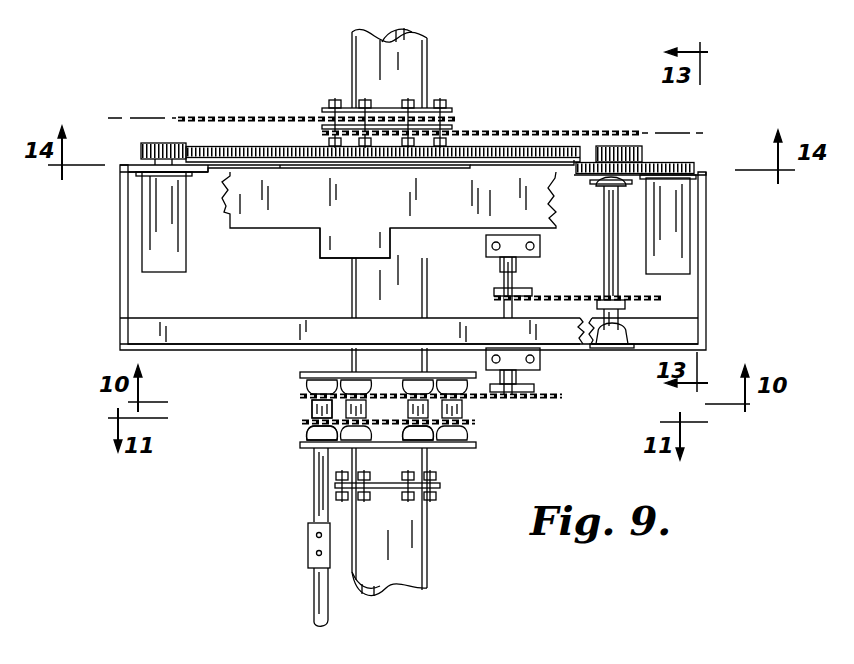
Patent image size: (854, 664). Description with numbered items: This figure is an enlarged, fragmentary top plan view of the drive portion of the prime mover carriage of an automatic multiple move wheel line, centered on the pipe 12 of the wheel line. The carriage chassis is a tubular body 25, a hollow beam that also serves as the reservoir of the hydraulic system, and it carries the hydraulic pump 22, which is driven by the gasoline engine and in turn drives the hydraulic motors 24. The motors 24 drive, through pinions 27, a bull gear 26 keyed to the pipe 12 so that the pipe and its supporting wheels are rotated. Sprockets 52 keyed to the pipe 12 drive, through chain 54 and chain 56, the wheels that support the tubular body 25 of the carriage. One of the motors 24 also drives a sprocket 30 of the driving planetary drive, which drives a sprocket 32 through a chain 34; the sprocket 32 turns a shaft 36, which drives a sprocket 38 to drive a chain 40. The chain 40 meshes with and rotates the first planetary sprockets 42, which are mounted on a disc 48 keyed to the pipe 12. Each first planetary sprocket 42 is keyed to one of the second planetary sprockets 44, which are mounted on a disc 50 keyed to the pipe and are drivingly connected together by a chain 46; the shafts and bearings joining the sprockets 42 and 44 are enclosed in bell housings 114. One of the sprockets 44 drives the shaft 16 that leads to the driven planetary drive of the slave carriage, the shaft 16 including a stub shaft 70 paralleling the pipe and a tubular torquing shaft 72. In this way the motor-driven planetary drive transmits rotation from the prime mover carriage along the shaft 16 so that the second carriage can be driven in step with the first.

The pipe 12 is at (354, 44).
The chain 54 is at (276, 116).
The bull gear 26 is at (240, 146).
The pinions 27 is at (155, 142).
The sprockets 52 is at (440, 128).
The chain 56 is at (512, 132).
The hydraulic motors 24 is at (143, 260).
The tubular body 25 is at (300, 228).
The hydraulic pump 22 is at (340, 260).
The shaft 36 is at (504, 276).
The sprocket 32 is at (496, 292).
The chain 34 is at (538, 299).
The sprocket 30 is at (624, 304).
The sprocket 38 is at (552, 392).
The chain 40 is at (486, 414).
The first planetary sprockets 42 is at (330, 374).
The disc 48 is at (312, 380).
The bell housings 114 is at (314, 424).
The disc 50 is at (314, 444).
The second planetary sprockets 44 is at (322, 450).
The chain 46 is at (404, 448).
The stub shaft 70 is at (312, 522).
The tubular torquing shaft 72 is at (310, 580).
The shaft 16 is at (316, 620).